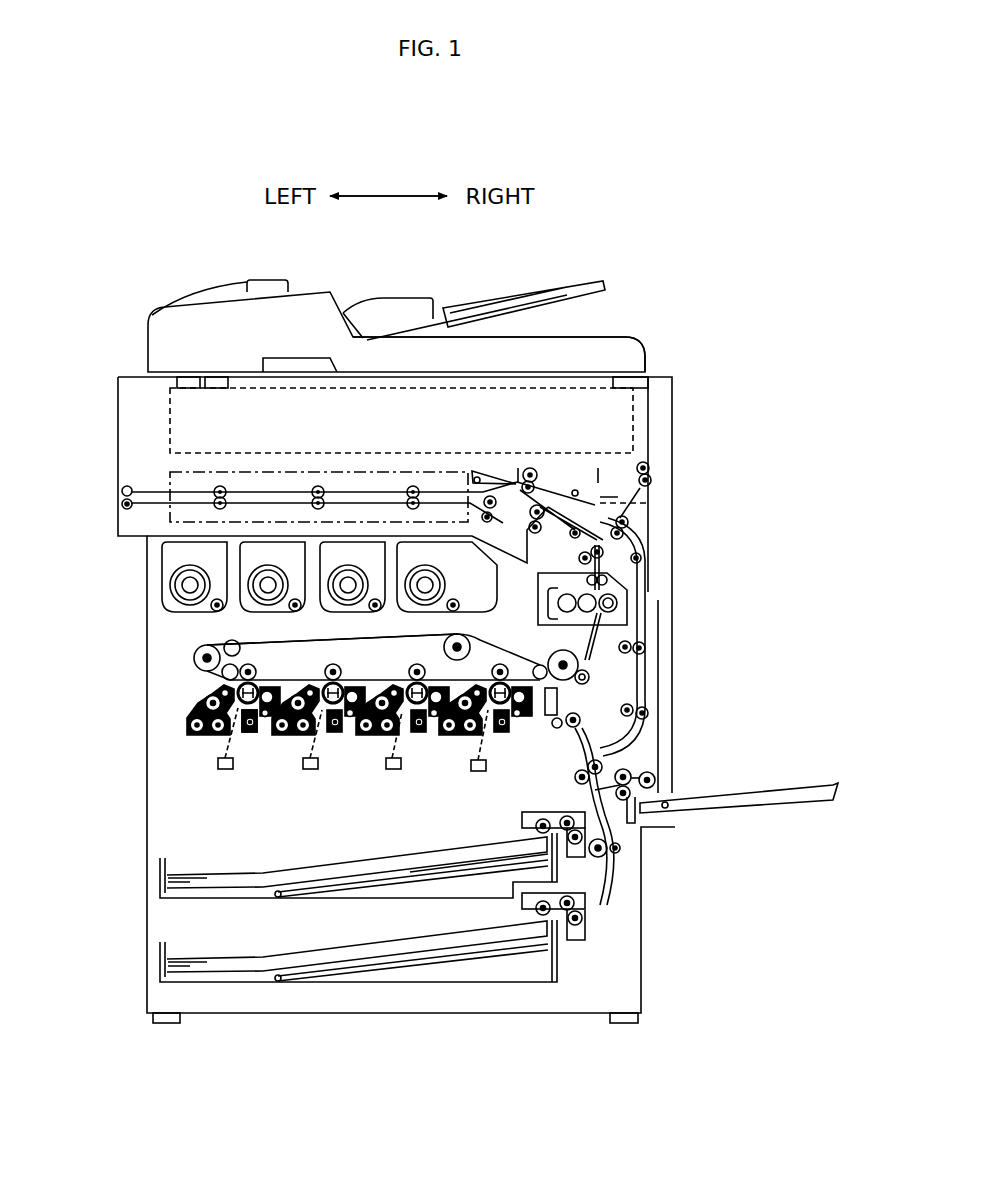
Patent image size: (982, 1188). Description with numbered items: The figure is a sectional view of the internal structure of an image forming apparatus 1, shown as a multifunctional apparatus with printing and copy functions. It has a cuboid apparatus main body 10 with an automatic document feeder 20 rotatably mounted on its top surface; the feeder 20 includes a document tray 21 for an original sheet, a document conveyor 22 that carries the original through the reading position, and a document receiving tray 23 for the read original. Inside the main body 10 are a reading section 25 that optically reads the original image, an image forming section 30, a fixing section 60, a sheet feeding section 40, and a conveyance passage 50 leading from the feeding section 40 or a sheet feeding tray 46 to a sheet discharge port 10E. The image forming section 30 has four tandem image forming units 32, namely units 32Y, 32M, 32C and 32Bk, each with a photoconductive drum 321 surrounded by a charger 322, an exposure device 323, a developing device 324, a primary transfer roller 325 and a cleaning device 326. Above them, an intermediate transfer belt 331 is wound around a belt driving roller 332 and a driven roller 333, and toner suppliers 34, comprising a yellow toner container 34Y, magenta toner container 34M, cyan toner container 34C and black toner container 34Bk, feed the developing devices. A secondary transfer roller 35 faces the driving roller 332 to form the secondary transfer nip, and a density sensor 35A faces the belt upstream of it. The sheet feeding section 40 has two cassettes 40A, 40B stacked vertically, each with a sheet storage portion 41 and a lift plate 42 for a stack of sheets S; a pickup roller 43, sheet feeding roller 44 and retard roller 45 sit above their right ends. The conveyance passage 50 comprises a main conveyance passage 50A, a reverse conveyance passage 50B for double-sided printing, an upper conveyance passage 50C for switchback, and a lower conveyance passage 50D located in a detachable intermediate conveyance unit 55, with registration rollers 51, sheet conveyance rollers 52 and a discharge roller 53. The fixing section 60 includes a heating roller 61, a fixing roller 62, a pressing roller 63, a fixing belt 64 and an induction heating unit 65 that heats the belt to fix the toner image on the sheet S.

The image forming apparatus 1 is at (688, 250).
The apparatus main body 10 is at (128, 773).
The sheet discharge port 10E is at (120, 491).
The automatic document feeder 20 is at (133, 303).
The document tray 21 is at (588, 280).
The document conveyor 22 is at (258, 282).
The document receiving tray 23 is at (588, 332).
The reading section 25 is at (638, 402).
The image forming section 30 is at (533, 627).
The image forming units 32 is at (164, 727).
The yellow image forming unit 32Y is at (211, 790).
The magenta image forming unit 32M is at (287, 790).
The cyan image forming unit 32C is at (361, 785).
The black image forming unit 32Bk is at (455, 768).
The photoconductive drum 321 is at (258, 684).
The charger 322 is at (247, 735).
The exposure device 323 is at (218, 764).
The developing device 324 is at (207, 712).
The primary transfer roller 325 is at (250, 663).
The cleaning device 326 is at (263, 714).
The intermediate transfer belt 331 is at (327, 640).
The belt driving roller 332 is at (565, 652).
The driven roller 333 is at (199, 653).
The toner suppliers 34 is at (147, 585).
The yellow toner container 34Y is at (195, 612).
The magenta toner container 34M is at (273, 612).
The cyan toner container 34C is at (353, 612).
The black toner container 34Bk is at (432, 612).
The secondary transfer roller 35 is at (590, 679).
The density sensor 35A is at (544, 716).
The sheet feeding section 40 is at (84, 866).
The sheet feeding cassette 40A is at (152, 887).
The sheet feeding cassette 40B is at (152, 954).
The sheet storage portion 41 is at (307, 895).
The lift plate 42 is at (415, 880).
The pickup roller 43 is at (536, 824).
The sheet feeding roller 44 is at (567, 815).
The retard roller 45 is at (576, 846).
The sheet feeding tray 46 is at (718, 815).
The conveyance passage 50 is at (665, 700).
The main conveyance passage 50A is at (575, 816).
The reverse conveyance passage 50B is at (640, 540).
The upper conveyance passage 50C is at (535, 470).
The lower conveyance passage 50D is at (277, 490).
The registration rollers 51 is at (563, 731).
The sheet conveyance rollers 52 is at (633, 733).
The discharge roller 53 is at (121, 509).
The intermediate conveyance unit 55 is at (444, 460).
The fixing section 60 is at (634, 591).
The heating roller 61 is at (557, 603).
The fixing roller 62 is at (585, 612).
The pressing roller 63 is at (618, 606).
The fixing belt 64 is at (557, 585).
The induction heating unit 65 is at (548, 614).
The sheet S is at (403, 853).